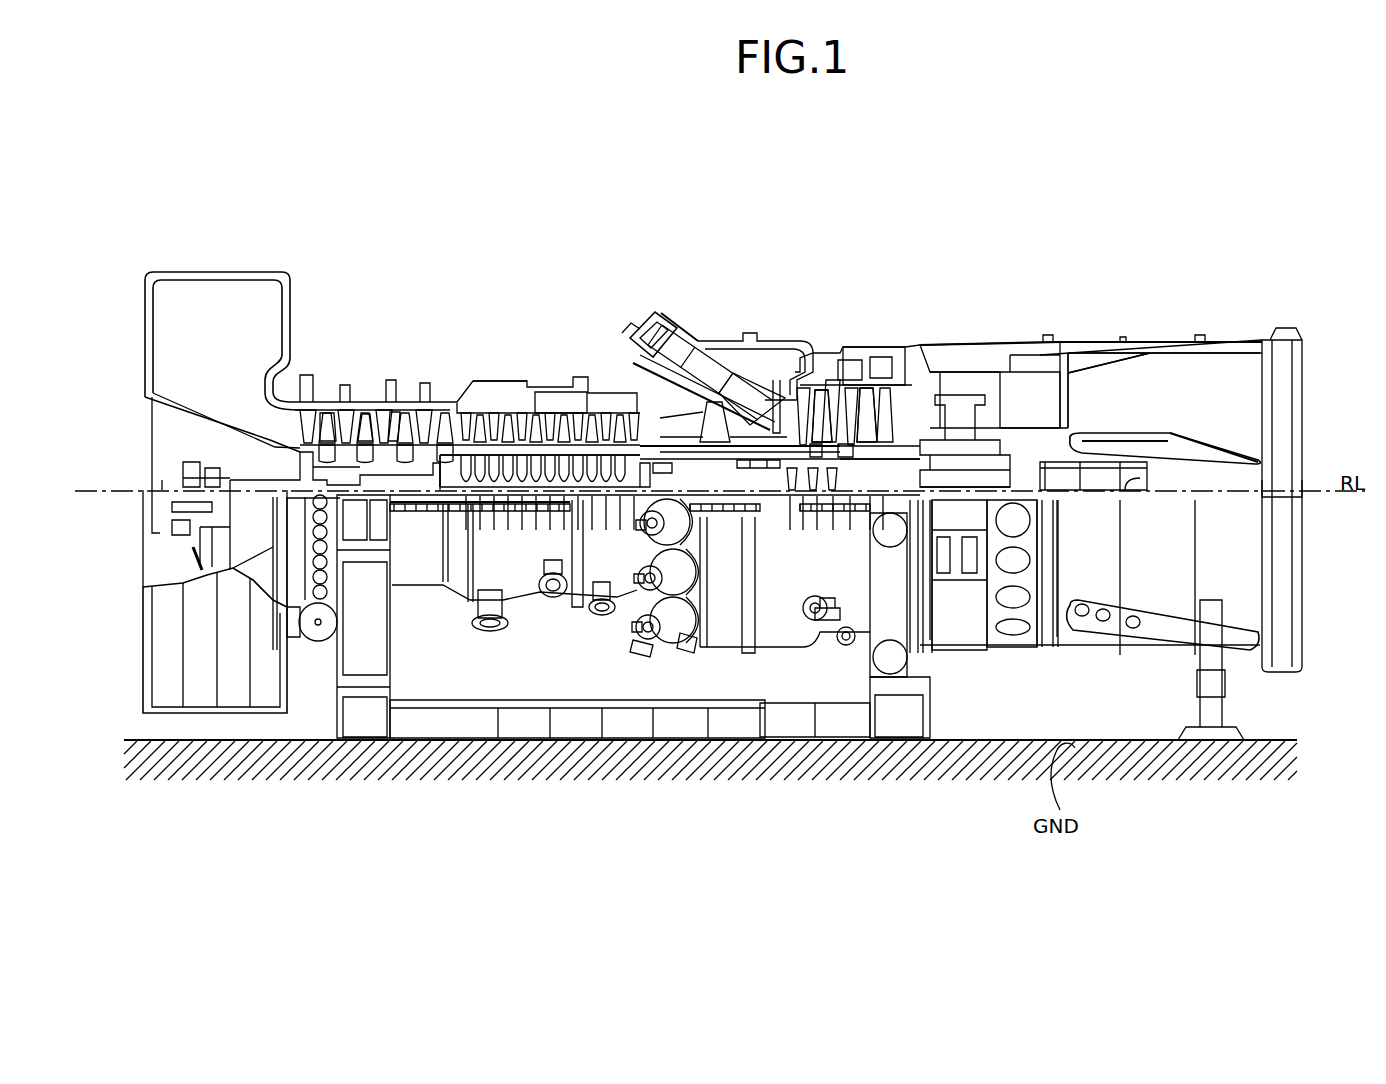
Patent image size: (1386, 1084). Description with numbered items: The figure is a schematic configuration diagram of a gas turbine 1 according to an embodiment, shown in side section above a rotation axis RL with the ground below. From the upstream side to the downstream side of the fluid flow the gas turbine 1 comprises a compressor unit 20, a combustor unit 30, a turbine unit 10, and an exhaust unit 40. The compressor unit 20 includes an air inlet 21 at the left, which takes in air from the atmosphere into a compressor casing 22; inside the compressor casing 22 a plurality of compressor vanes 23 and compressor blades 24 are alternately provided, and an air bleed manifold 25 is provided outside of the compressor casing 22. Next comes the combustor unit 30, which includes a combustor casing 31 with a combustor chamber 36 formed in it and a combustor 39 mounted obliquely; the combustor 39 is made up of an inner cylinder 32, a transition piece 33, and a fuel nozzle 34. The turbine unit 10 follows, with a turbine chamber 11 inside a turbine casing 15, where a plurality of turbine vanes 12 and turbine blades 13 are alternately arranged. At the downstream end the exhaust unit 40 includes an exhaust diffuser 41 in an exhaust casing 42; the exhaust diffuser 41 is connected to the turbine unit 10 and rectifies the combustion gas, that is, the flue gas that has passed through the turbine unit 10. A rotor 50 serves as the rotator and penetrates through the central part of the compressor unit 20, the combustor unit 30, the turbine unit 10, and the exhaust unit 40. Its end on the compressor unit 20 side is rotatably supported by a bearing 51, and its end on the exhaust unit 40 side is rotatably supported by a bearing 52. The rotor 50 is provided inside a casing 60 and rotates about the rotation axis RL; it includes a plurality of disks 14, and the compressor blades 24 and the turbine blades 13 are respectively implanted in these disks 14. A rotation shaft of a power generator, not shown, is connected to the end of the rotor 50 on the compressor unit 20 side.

The gas turbine 1 is at (1243, 176).
The turbine unit 10 is at (930, 240).
The turbine chamber 11 is at (870, 408).
The turbine vane 12 is at (817, 403).
The turbine blade 13 is at (830, 408).
The disk 14 is at (455, 470).
The turbine casing 15 is at (847, 348).
The compressor unit 20 is at (622, 240).
The air inlet 21 is at (220, 298).
The compressor casing 22 is at (330, 415).
The compressor vane 23 is at (370, 424).
The compressor blade 24 is at (398, 426).
The air bleed manifold 25 is at (497, 402).
The combustor unit 30 is at (796, 240).
The combustor casing 31 is at (762, 338).
The inner cylinder 32 is at (688, 354).
The transition piece 33 is at (727, 372).
The fuel nozzle 34 is at (650, 334).
The combustor chamber 36 is at (775, 350).
The combustor 39 is at (634, 316).
The exhaust unit 40 is at (1290, 240).
The exhaust diffuser 41 is at (1011, 376).
The exhaust casing 42 is at (1052, 348).
The rotor 50 is at (681, 485).
The bearing 51 is at (194, 460).
The bearing 52 is at (968, 478).
The casing 60 is at (1162, 316).